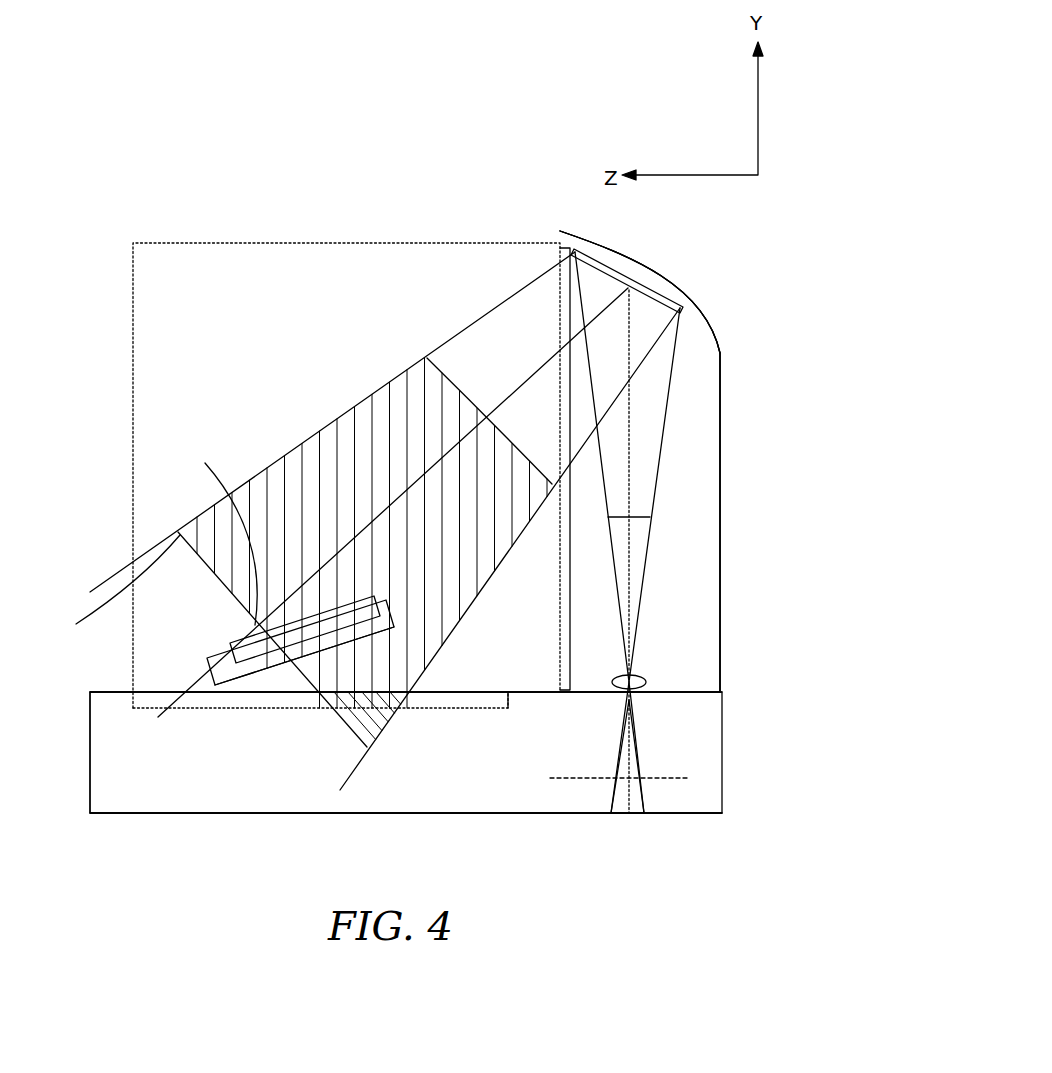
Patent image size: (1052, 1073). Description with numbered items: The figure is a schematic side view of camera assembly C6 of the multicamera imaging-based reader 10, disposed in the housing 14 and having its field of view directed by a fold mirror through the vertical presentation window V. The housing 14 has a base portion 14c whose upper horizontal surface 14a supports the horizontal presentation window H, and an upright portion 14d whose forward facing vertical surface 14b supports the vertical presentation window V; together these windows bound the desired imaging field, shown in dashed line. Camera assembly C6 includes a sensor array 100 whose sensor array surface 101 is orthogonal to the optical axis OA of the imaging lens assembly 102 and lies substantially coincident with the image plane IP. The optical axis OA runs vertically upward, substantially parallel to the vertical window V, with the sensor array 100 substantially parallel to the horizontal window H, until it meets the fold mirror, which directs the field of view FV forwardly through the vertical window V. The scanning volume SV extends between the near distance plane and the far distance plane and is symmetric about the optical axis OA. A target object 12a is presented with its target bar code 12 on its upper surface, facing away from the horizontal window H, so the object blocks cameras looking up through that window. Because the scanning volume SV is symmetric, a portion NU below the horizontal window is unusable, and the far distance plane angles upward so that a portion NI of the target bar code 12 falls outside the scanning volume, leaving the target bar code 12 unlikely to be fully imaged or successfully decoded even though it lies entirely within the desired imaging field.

The reader 10 is at (745, 316).
The target bar code 12 is at (313, 620).
The target object 12a is at (238, 679).
The housing 14 is at (688, 521).
The upper horizontal surface 14a is at (100, 692).
The forward facing vertical surface 14b is at (562, 238).
The base portion 14c is at (100, 796).
The upright portion 14d is at (720, 402).
The sensor array 100 is at (617, 797).
The sensor array surface 101 is at (633, 773).
The imaging lens assembly 102 is at (637, 677).